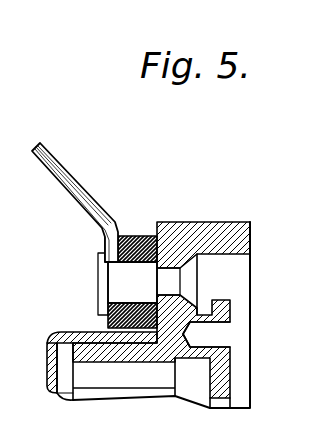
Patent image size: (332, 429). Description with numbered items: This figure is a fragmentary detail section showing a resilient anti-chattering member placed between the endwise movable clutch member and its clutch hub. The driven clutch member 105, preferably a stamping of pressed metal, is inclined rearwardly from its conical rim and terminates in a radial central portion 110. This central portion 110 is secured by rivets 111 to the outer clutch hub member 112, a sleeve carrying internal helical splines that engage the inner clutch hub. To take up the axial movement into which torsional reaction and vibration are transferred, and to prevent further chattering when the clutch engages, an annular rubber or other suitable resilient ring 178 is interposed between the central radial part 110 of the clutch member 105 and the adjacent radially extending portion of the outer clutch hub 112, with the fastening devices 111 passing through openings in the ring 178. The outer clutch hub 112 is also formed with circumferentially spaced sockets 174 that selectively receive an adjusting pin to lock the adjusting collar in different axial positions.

The driven clutch member 105 is at (82, 193).
The resilient ring 178 is at (134, 236).
The radial central portion 110 is at (105, 248).
The rivets 111 is at (121, 282).
The outer clutch hub member 112 is at (98, 346).
The sockets 174 is at (216, 335).